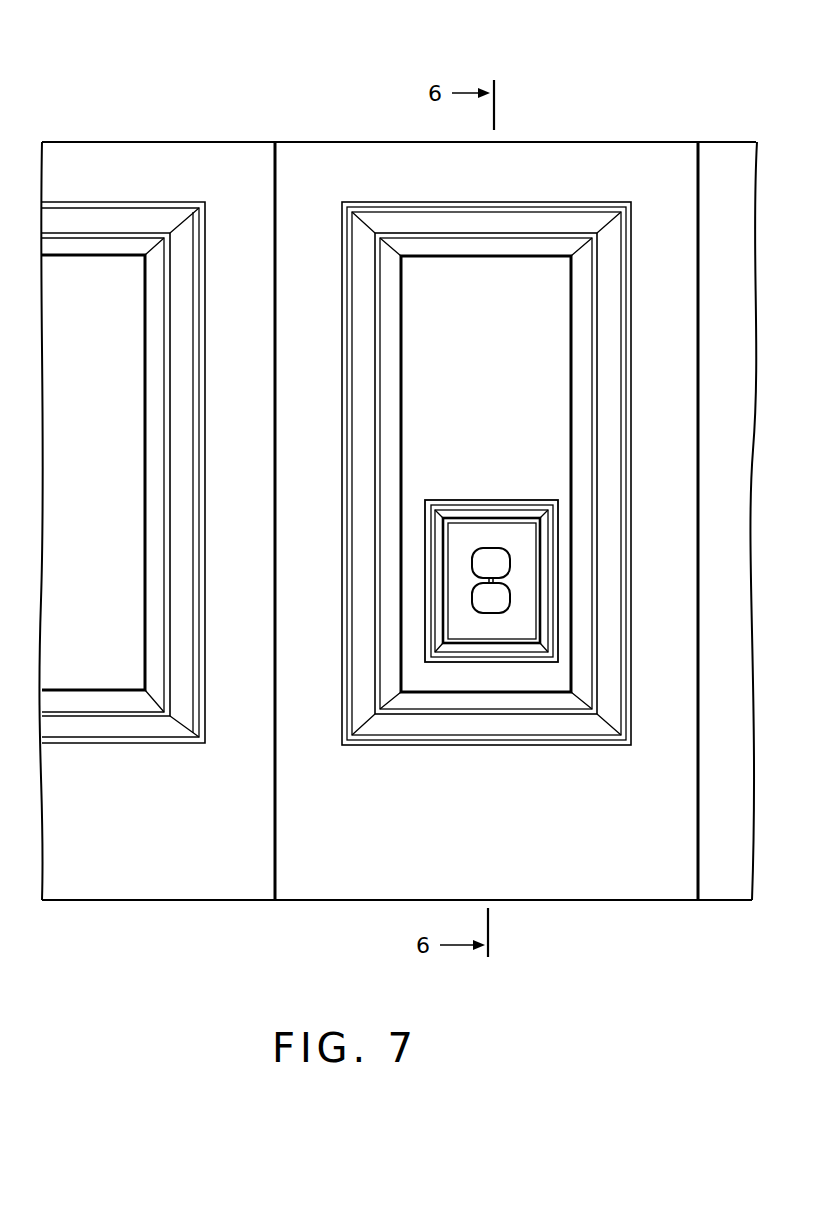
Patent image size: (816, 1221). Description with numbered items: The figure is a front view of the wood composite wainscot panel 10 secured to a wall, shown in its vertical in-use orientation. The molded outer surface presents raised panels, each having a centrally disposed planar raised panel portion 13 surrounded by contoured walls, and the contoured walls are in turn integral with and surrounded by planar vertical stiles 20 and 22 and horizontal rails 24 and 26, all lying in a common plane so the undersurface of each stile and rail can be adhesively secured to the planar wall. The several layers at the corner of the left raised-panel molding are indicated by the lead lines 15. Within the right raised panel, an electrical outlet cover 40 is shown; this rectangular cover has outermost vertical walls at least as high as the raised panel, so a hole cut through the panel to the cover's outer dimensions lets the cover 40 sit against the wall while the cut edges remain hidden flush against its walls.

The wainscot panel 10 is at (620, 178).
The planar raised panel portion 13 is at (93, 409).
The molding strips 15 is at (148, 255).
The planar vertical stile 20 is at (324, 527).
The planar vertical stile 22 is at (256, 507).
The horizontal rail 24 is at (108, 832).
The horizontal rail 26 is at (110, 186).
The outlet cover 40 is at (486, 546).